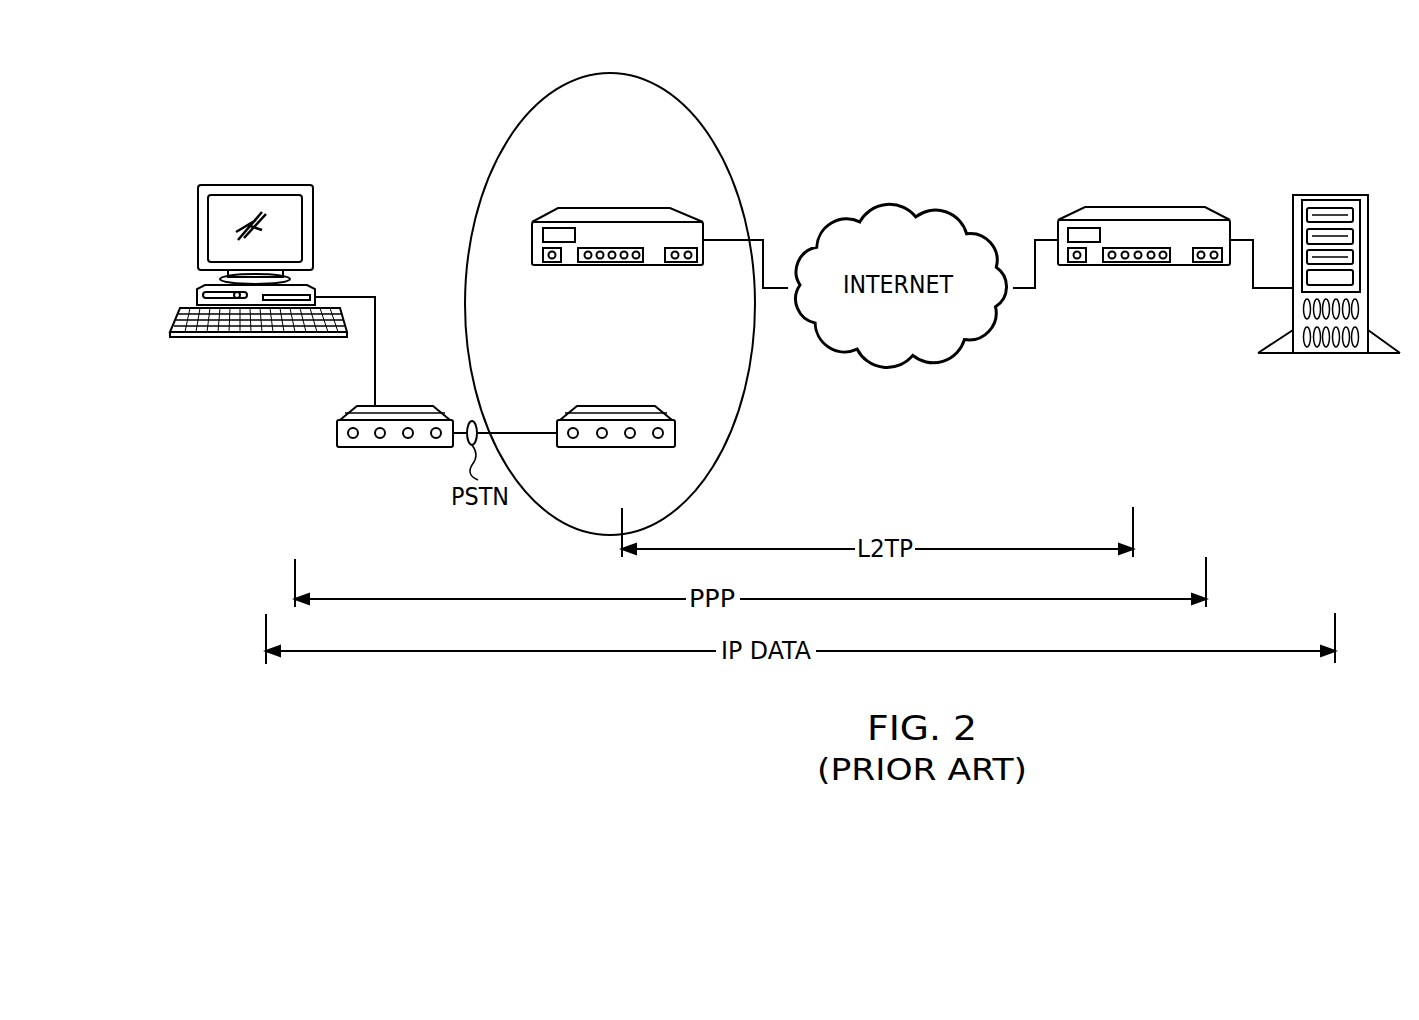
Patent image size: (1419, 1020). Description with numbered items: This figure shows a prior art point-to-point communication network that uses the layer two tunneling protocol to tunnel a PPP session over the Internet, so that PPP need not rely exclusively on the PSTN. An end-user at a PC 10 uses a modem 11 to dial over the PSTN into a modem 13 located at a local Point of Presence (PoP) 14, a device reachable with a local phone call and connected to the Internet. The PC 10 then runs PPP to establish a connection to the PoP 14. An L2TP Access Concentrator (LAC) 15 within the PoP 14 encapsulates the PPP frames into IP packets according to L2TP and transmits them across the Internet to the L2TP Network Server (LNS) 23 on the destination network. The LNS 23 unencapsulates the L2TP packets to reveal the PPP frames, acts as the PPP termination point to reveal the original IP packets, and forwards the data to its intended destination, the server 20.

The PC 10 is at (198, 222).
The modem 11 is at (337, 433).
The modem 13 is at (638, 406).
The Point of Presence (PoP) 14 is at (599, 148).
The L2TP Access Concentrator (LAC) 15 is at (532, 244).
The server 20 is at (1369, 256).
The L2TP Network Server (LNS) 23 is at (1176, 266).